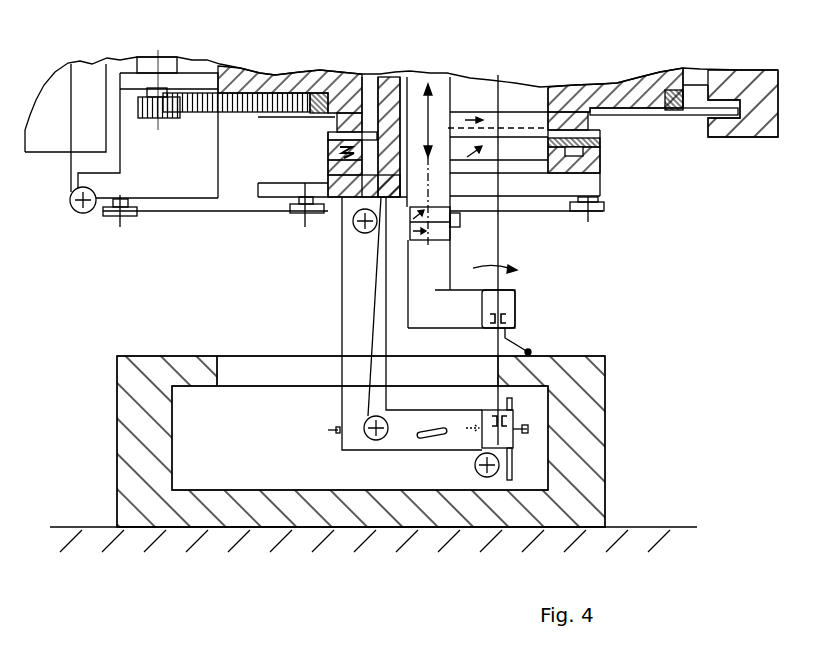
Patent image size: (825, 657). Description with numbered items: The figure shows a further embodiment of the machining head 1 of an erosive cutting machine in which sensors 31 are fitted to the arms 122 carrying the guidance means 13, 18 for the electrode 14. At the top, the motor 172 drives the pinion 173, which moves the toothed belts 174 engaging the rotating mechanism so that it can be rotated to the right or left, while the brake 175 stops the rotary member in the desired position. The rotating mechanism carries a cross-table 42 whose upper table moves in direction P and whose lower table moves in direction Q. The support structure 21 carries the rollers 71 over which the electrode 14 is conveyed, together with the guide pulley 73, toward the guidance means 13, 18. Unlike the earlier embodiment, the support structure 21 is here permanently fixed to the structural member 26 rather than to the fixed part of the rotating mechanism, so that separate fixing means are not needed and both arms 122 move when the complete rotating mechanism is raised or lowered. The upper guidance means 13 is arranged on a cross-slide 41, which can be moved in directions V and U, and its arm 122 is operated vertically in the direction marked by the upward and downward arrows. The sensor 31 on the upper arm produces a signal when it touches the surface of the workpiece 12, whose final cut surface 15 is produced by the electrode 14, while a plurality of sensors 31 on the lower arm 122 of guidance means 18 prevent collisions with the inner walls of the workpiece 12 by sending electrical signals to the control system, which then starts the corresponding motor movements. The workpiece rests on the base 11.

The machining head 1 is at (47, 144).
The foundation / ground 11 is at (93, 535).
The workpiece 12 is at (118, 401).
The guidance means 13 is at (517, 315).
The electrode 14 is at (498, 251).
The cut surface 15 is at (231, 357).
The guidance means 18 is at (490, 413).
The support structure 21 is at (383, 80).
The structural member 26 is at (281, 187).
The sensors 31 is at (532, 350).
The cross-slide 41 is at (460, 220).
The cross-table 42 is at (590, 147).
The rollers 71 is at (127, 220).
The guide pulley 73 is at (75, 212).
The arms 122 is at (348, 265).
The motor 172 is at (146, 63).
The pinion 173 is at (147, 119).
The toothed belts 174 is at (227, 114).
The brake 175 is at (720, 120).